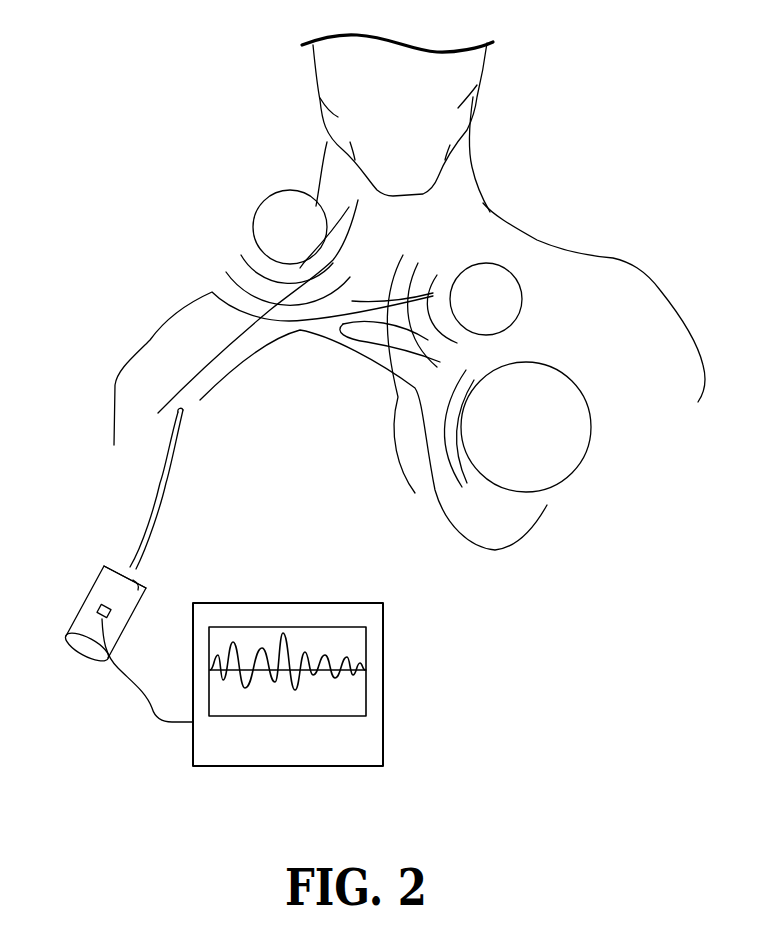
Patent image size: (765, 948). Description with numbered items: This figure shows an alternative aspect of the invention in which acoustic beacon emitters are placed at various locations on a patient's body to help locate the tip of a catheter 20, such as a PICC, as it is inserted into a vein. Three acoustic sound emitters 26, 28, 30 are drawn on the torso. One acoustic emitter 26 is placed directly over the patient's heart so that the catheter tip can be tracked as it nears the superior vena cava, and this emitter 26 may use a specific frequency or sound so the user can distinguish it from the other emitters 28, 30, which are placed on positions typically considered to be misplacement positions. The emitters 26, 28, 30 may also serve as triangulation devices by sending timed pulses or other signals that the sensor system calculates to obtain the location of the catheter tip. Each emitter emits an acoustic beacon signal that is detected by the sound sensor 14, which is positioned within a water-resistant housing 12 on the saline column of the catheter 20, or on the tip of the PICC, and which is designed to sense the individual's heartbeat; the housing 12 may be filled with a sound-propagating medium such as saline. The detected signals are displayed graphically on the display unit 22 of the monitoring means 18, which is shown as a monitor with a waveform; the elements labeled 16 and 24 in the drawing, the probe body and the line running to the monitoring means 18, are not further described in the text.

The housing 12 is at (97, 578).
The sound sensor 14 is at (95, 608).
The probe housing 16 is at (135, 580).
The monitoring means 18 is at (384, 737).
The catheter 20 is at (161, 513).
The display unit 22 is at (285, 703).
The monitor cable 24 is at (138, 680).
The acoustic emitter 26 is at (591, 412).
The acoustic emitter 28 is at (256, 213).
The acoustic emitter 30 is at (522, 290).